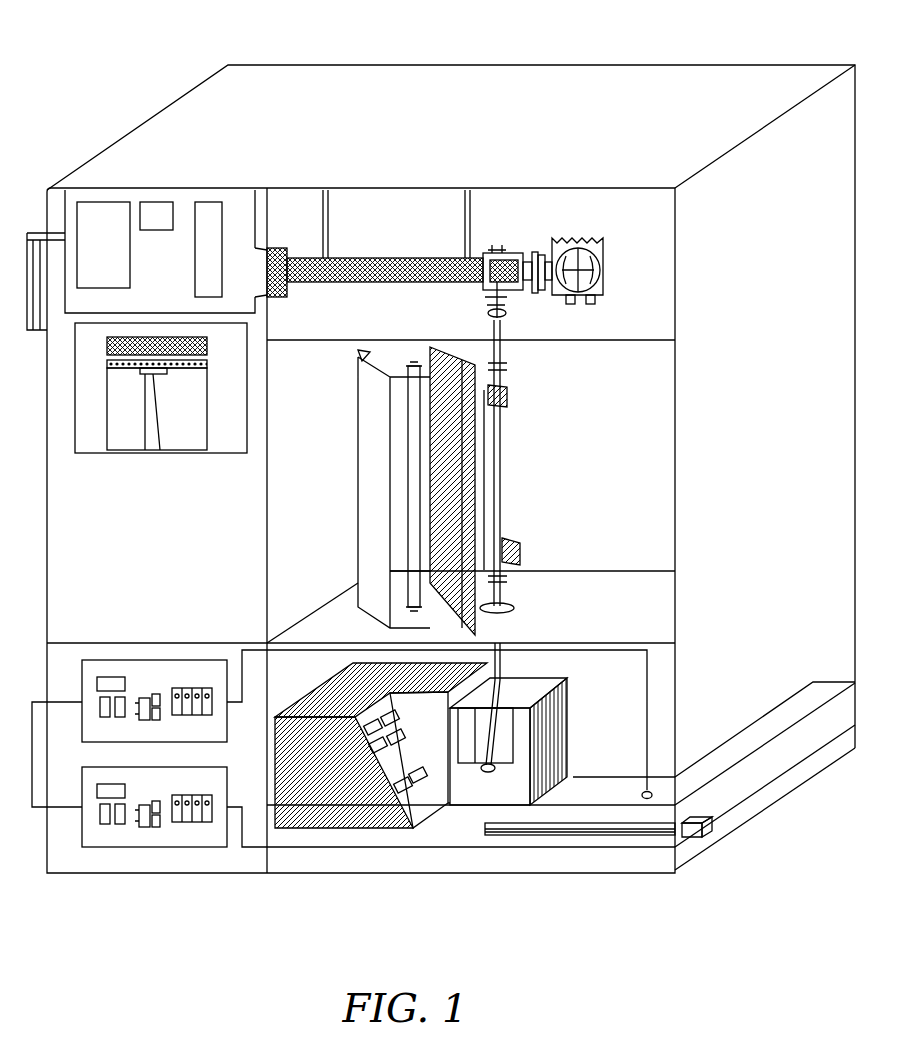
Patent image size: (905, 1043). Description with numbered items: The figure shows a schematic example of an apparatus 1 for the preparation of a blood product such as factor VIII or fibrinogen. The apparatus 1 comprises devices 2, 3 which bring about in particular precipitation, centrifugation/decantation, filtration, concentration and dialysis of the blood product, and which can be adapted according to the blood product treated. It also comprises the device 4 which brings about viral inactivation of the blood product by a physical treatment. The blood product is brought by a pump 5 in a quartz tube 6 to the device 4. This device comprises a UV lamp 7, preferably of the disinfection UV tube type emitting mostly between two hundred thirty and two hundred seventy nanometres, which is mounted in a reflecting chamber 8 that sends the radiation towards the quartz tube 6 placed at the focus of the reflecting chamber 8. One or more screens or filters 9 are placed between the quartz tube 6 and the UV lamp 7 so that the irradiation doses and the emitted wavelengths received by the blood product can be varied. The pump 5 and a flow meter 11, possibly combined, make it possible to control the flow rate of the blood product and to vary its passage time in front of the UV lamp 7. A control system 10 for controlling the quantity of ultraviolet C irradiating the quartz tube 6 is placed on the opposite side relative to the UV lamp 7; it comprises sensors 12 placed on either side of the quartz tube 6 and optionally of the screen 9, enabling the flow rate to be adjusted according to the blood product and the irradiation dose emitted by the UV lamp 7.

The apparatus 1 is at (102, 127).
The device 2 is at (580, 838).
The device 3 is at (160, 251).
The device 4 is at (354, 489).
The pump 5 is at (487, 783).
The quartz tube 6 is at (500, 490).
The UV lamp 7 is at (357, 354).
The reflecting chamber 8 is at (372, 516).
The screen or filter 9 is at (459, 346).
The control system 10 is at (167, 838).
The flow meter 11 is at (603, 273).
The sensor 12 is at (507, 398).